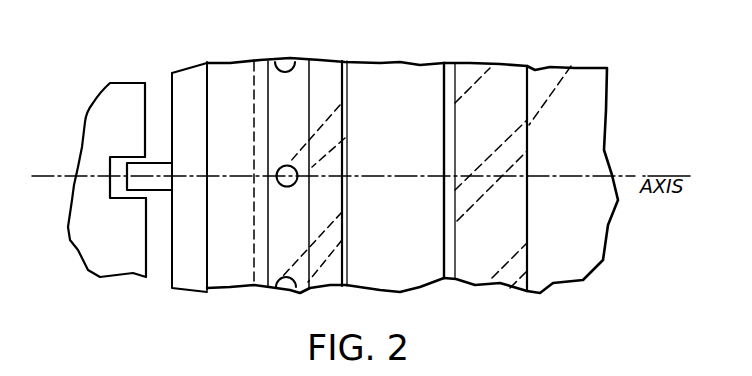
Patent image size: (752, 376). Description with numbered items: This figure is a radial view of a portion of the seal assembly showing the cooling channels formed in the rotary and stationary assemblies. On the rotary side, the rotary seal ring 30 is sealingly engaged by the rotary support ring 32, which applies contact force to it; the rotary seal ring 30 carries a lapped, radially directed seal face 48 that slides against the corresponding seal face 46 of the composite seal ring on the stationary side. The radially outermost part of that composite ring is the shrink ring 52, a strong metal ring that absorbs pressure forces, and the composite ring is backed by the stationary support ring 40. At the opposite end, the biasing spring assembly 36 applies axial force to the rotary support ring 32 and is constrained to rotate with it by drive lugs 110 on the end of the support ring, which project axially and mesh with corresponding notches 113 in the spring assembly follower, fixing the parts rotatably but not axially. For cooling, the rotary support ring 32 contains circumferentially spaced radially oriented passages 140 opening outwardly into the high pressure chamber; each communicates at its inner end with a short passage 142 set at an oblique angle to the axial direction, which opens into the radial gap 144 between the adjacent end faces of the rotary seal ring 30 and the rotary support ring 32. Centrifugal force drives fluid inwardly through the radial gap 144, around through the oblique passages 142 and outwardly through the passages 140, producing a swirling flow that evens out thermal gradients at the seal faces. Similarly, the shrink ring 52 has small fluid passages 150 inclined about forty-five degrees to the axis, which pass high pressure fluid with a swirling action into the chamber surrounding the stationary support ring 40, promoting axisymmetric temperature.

The rotary seal ring 30 is at (380, 127).
The rotary support ring 32 is at (220, 98).
The biasing spring assembly 36 is at (102, 139).
The stationary support ring 40 is at (571, 146).
The seal face 46 is at (445, 118).
The seal face 48 is at (447, 135).
The shrink ring 52 is at (498, 109).
The drive lugs 110 is at (122, 166).
The notches 113 is at (157, 171).
The radially oriented passages 140 is at (288, 166).
The short passages 142 is at (312, 165).
The radial gap 144 is at (342, 98).
The fluid passages 150 is at (573, 62).